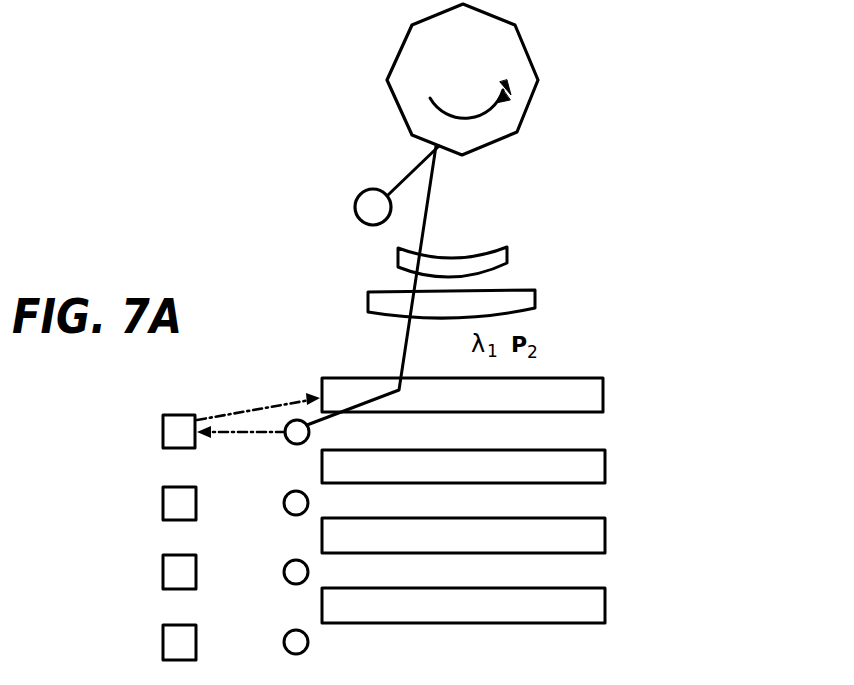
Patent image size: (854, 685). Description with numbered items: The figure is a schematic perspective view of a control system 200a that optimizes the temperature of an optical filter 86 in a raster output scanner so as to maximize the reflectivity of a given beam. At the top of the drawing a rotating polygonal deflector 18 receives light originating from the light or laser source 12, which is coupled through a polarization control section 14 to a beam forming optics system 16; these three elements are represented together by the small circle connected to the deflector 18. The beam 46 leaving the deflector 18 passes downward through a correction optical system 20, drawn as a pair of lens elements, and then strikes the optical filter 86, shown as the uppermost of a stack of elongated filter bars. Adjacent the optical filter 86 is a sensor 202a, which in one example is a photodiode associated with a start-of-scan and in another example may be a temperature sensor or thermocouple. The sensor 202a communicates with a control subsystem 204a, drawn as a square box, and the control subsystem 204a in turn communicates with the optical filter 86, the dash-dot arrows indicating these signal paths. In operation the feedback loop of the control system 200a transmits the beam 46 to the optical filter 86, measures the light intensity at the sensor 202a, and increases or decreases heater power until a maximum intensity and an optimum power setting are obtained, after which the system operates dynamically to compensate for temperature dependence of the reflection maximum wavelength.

The deflector 18 is at (545, 51).
The light or laser source 12 is at (341, 185).
The polarization control section 14 is at (341, 185).
The beam forming optics system 16 is at (358, 190).
The correction optical system 20 is at (552, 260).
The beam 46 is at (406, 343).
The optical filter 86 is at (567, 375).
The control system 200a is at (267, 405).
The sensor 202a is at (292, 446).
The control subsystem 204a is at (160, 428).